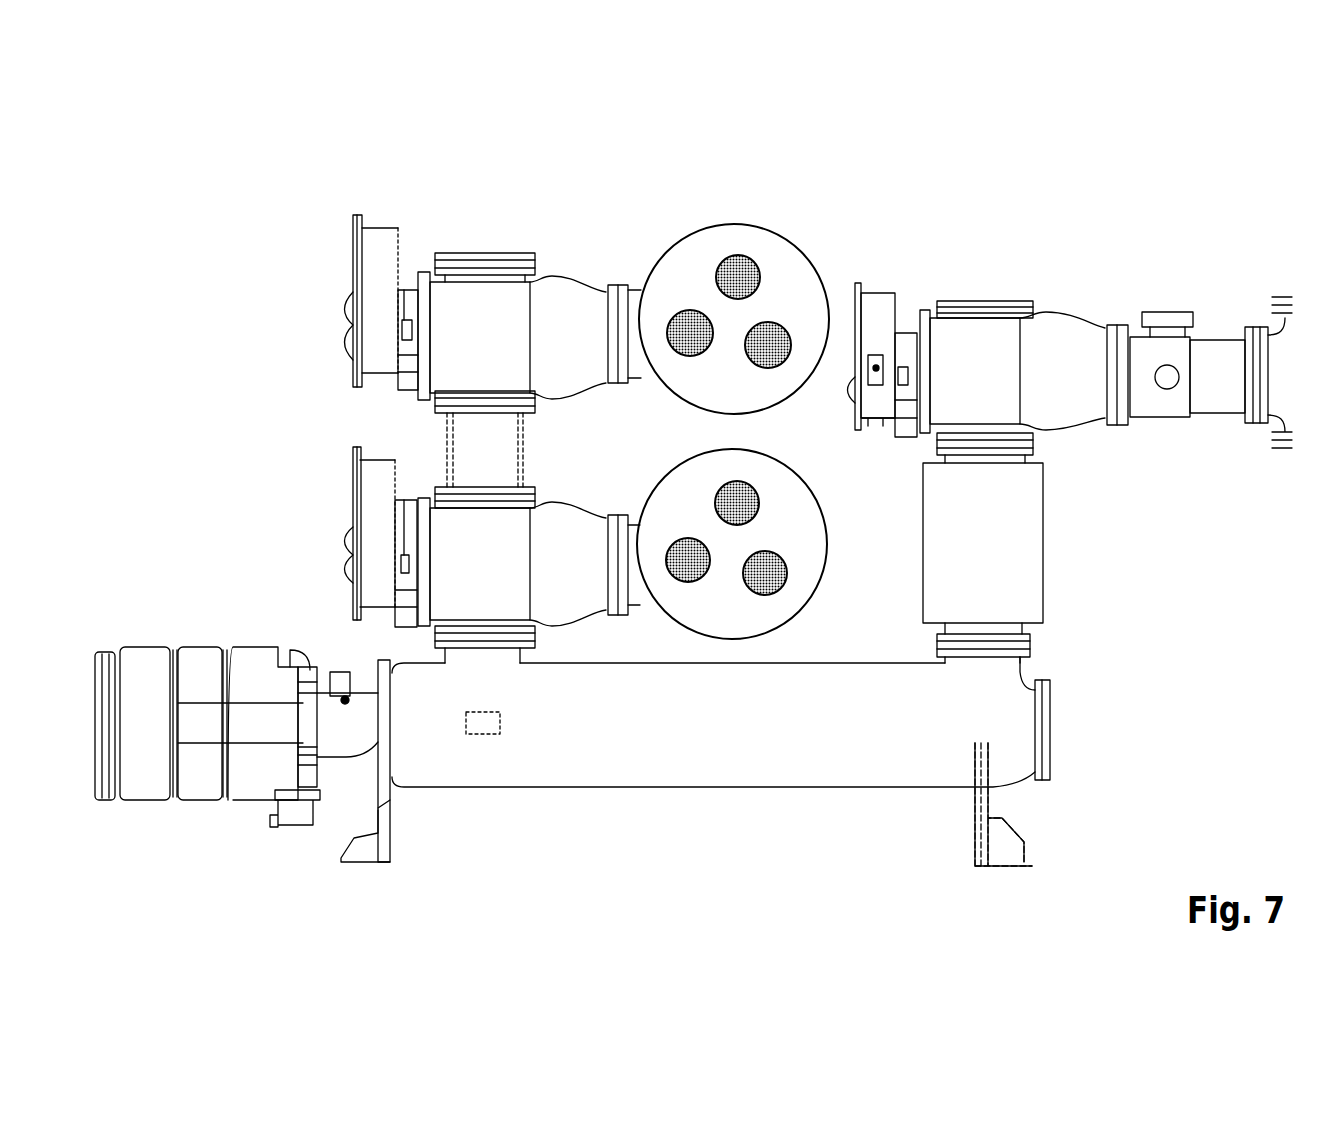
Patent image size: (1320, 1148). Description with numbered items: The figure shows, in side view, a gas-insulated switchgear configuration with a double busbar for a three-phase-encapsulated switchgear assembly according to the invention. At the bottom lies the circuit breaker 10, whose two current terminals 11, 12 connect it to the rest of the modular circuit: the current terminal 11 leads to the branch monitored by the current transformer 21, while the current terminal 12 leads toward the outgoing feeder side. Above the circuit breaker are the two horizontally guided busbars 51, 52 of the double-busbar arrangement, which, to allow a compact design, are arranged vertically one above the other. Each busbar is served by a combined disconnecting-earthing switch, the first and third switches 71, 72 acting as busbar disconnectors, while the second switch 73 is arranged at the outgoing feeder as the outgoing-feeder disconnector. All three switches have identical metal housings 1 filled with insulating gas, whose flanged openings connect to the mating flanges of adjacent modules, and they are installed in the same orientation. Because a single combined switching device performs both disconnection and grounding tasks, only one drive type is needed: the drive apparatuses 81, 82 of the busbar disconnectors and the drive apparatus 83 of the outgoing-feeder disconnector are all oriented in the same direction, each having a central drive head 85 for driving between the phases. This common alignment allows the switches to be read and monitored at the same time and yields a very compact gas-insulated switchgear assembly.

The housing 1 is at (566, 277).
The circuit breaker 10 is at (703, 715).
The current terminal 11 is at (488, 628).
The current terminal 12 is at (975, 630).
The current transformer 21 is at (988, 512).
The busbar 51 is at (692, 510).
The busbar 52 is at (772, 252).
The combined disconnecting-earthing switch 71 is at (487, 560).
The combined disconnecting-earthing switch 72 is at (500, 312).
The combined disconnecting-earthing switch 73 is at (990, 345).
The drive apparatus 81 is at (405, 527).
The drive apparatus 82 is at (405, 324).
The drive apparatus 83 is at (912, 357).
The central drive head 85 is at (372, 285).